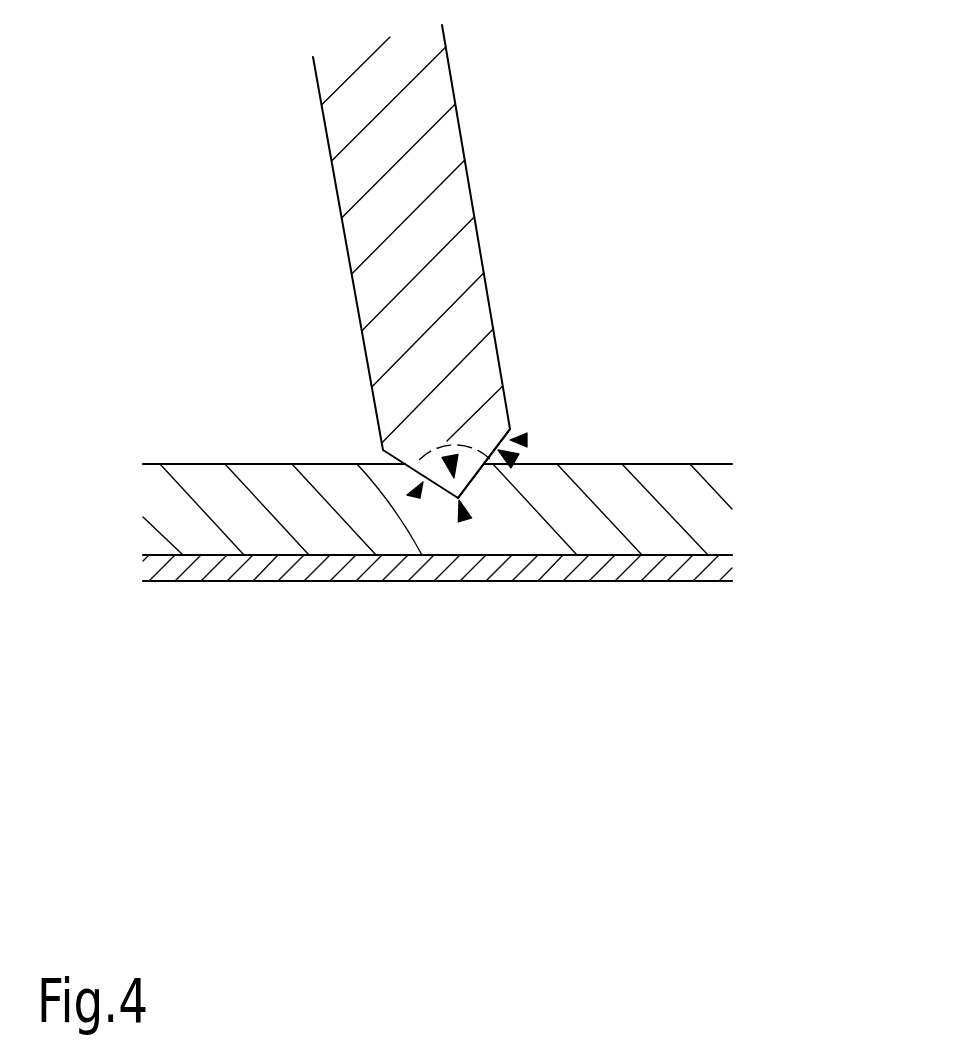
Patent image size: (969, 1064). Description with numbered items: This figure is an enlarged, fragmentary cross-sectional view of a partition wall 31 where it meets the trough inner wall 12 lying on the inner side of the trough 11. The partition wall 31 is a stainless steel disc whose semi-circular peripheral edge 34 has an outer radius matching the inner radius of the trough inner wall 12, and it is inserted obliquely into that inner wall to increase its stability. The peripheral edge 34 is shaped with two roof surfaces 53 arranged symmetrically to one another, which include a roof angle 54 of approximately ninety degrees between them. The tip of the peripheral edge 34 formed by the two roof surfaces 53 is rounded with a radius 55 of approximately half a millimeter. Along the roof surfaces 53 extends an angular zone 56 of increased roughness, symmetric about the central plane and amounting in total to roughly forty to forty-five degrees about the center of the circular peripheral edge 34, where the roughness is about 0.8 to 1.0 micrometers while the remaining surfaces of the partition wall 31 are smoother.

The partition wall 31 is at (410, 240).
The roof angle 54 is at (448, 450).
The peripheral edge 34 is at (527, 442).
The trough inner wall 12 is at (697, 497).
The trough 11 is at (683, 568).
The angular zone of increased roughness 56 is at (413, 497).
The roof surfaces 53 is at (432, 490).
The radius 55 is at (464, 522).